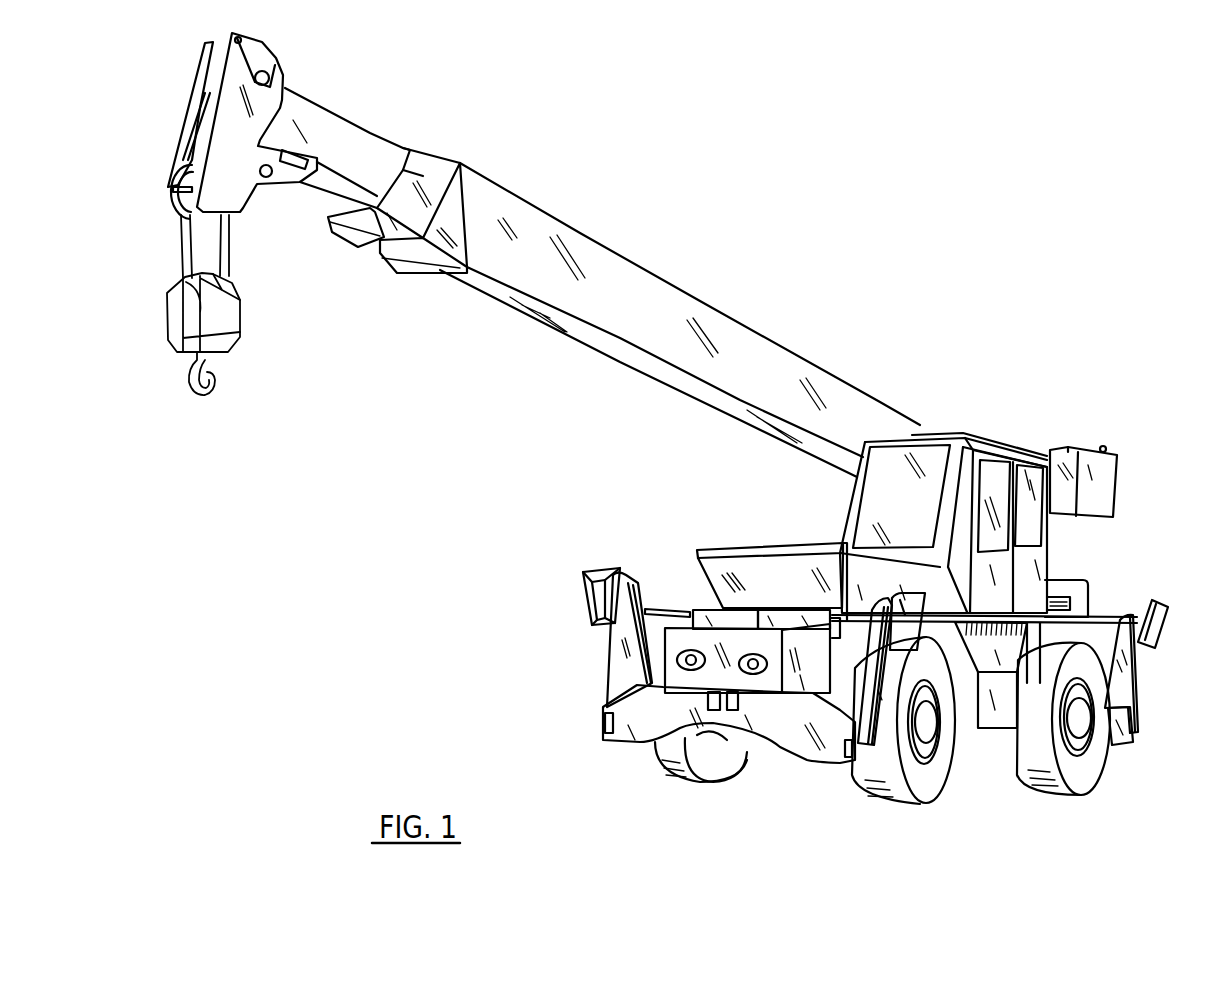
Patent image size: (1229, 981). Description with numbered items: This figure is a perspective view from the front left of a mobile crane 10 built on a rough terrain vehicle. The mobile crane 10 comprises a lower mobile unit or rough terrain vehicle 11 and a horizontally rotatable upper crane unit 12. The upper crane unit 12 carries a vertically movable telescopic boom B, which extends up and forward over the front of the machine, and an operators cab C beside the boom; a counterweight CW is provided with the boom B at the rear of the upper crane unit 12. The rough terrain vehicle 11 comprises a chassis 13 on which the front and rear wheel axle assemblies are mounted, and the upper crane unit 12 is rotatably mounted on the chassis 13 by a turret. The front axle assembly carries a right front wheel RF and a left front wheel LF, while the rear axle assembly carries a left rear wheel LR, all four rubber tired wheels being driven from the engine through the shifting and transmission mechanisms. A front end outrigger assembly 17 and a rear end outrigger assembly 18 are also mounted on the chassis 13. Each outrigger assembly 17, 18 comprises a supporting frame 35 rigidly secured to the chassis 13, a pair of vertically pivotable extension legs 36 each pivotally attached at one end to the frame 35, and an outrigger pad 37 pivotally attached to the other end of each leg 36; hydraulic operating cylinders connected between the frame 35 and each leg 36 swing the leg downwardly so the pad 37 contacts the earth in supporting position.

The mobile crane 10 is at (996, 412).
The rough terrain vehicle 11 is at (606, 680).
The upper crane unit 12 is at (783, 523).
The chassis 13 is at (795, 684).
The front end outrigger assembly 17 is at (783, 742).
The rear end outrigger assembly 18 is at (1115, 745).
The supporting frame 35 is at (643, 722).
The extension leg 36 is at (612, 648).
The outrigger pad 37 is at (583, 590).
The telescopic boom B is at (706, 306).
The operators cab C is at (857, 501).
The counterweight CW is at (1098, 480).
The right front wheel RF is at (667, 757).
The left front wheel LF is at (890, 795).
The left rear wheel LR is at (1087, 777).